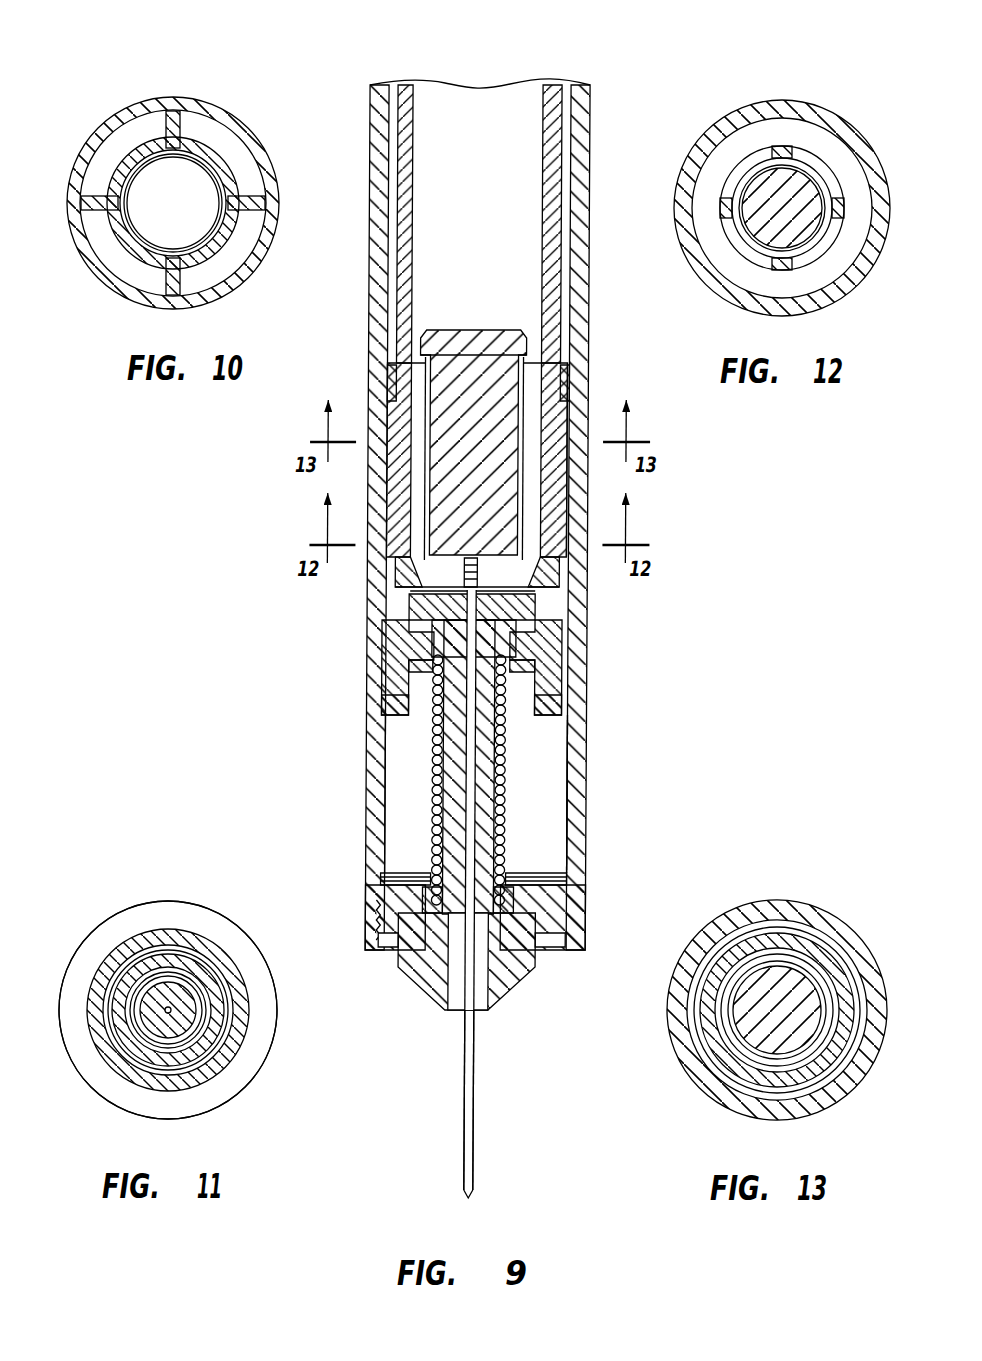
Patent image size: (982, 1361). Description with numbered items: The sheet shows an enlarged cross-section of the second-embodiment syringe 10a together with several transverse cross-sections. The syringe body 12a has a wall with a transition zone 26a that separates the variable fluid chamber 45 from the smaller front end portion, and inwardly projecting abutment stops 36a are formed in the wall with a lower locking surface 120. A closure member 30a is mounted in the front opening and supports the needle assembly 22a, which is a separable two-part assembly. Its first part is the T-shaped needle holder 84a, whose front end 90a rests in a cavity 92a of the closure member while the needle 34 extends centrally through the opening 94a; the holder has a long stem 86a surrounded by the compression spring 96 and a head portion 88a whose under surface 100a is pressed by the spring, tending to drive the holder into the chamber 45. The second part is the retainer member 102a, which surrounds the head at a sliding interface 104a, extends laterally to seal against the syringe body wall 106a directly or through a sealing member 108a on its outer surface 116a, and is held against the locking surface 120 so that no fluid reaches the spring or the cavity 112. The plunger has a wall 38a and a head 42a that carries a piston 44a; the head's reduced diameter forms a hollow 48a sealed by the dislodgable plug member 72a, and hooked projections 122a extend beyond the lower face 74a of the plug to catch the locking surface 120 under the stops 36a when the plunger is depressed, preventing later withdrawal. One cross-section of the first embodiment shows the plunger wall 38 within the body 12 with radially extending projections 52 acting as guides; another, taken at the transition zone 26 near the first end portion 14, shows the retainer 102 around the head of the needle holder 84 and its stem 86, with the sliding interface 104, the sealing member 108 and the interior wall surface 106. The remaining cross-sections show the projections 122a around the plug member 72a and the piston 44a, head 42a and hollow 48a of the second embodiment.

In FIG. 9, the syringe 10a is at (472, 50).
In FIG. 9, the syringe body 12a is at (596, 100).
In FIG. 12, the syringe body 12a is at (748, 98).
In FIG. 13, the syringe body 12a is at (708, 920).
In FIG. 9, the plunger wall 38a is at (563, 202).
In FIG. 9, the dislodgable plug member 72a is at (474, 422).
In FIG. 12, the dislodgable plug member 72a is at (764, 188).
In FIG. 13, the dislodgable plug member 72a is at (807, 992).
In FIG. 9, the hooked projections 122a is at (412, 562).
In FIG. 12, the hooked projections 122a is at (797, 152).
In FIG. 9, the lower face 74a is at (432, 542).
In FIG. 9, the variable fluid chamber 45 is at (584, 545).
In FIG. 9, the abutment stops 36a is at (410, 606).
In FIG. 9, the transition zone 26a is at (467, 688).
In FIG. 9, the sealing member 108a is at (394, 650).
In FIG. 9, the locking surface 120 is at (564, 640).
In FIG. 9, the sliding interface 104a is at (427, 658).
In FIG. 9, the syringe body wall 106a is at (400, 704).
In FIG. 9, the retainer member 102a is at (567, 680).
In FIG. 9, the head portion 88a is at (454, 640).
In FIG. 9, the needle holder 84a is at (494, 838).
In FIG. 9, the under surface 100a is at (394, 738).
In FIG. 9, the outer surface 116a is at (574, 698).
In FIG. 9, the cavity 112 is at (544, 811).
In FIG. 9, the stem 86a is at (439, 832).
In FIG. 9, the compression spring 96 is at (440, 864).
In FIG. 9, the needle assembly 22a is at (420, 780).
In FIG. 9, the cavity 92a is at (389, 884).
In FIG. 9, the front end 90a is at (494, 945).
In FIG. 9, the closure member 30a is at (500, 1000).
In FIG. 9, the needle 34 is at (471, 1122).
In FIG. 9, the opening 94a is at (479, 1014).
In FIG. 10, the syringe body 12 is at (218, 95).
In FIG. 10, the plunger wall 38 is at (121, 254).
In FIG. 10, the projections 52 is at (168, 120).
In FIG. 11, the transition zone 26 is at (115, 904).
In FIG. 11, the first end portion 14 is at (110, 1075).
In FIG. 11, the interior wall surface 106 is at (163, 937).
In FIG. 11, the sealing member 108 is at (208, 956).
In FIG. 11, the retainer member 102 is at (223, 993).
In FIG. 11, the sliding interface 104 is at (216, 1009).
In FIG. 11, the stem portion 86 is at (207, 1055).
In FIG. 11, the needle holder 84 is at (185, 1050).
In FIG. 13, the piston 44a is at (787, 935).
In FIG. 13, the head 42a is at (732, 1080).
In FIG. 13, the hollow 48a is at (785, 1060).